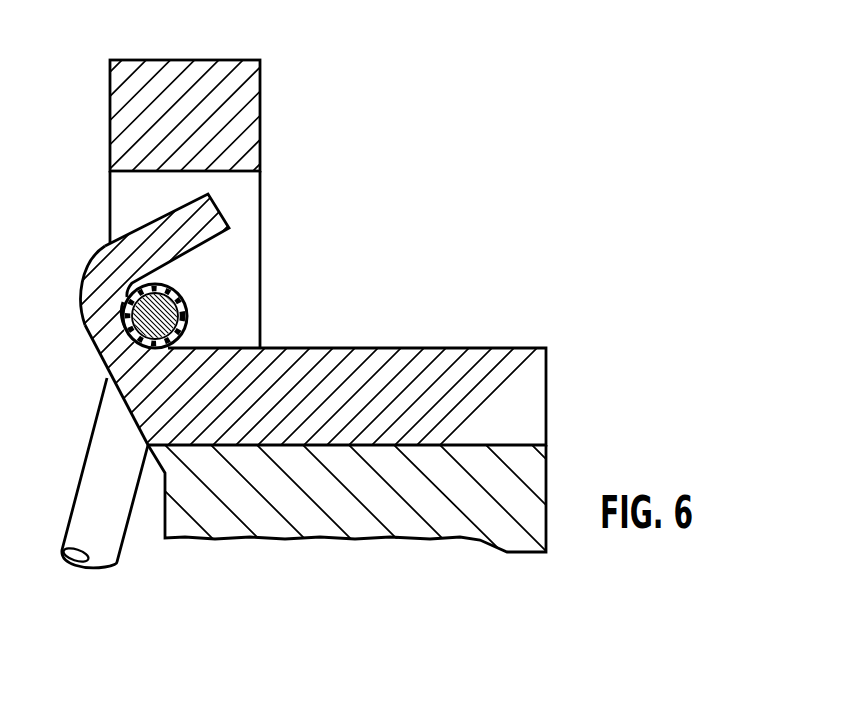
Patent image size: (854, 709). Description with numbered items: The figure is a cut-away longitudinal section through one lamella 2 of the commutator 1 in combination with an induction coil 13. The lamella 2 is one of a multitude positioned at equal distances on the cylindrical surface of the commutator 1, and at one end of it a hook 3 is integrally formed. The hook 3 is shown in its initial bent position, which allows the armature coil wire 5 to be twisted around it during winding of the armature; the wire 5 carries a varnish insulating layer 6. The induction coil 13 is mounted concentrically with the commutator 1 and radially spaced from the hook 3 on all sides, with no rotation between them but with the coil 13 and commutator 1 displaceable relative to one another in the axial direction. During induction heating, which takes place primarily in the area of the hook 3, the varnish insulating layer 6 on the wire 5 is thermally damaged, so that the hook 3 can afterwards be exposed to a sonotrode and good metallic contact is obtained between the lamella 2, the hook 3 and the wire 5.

The commutator 1 is at (423, 350).
The lamella 2 is at (515, 402).
The hook 3 is at (103, 263).
The armature coil wire 5 is at (128, 317).
The varnish insulating layer 6 is at (186, 300).
The induction coil 13 is at (245, 121).